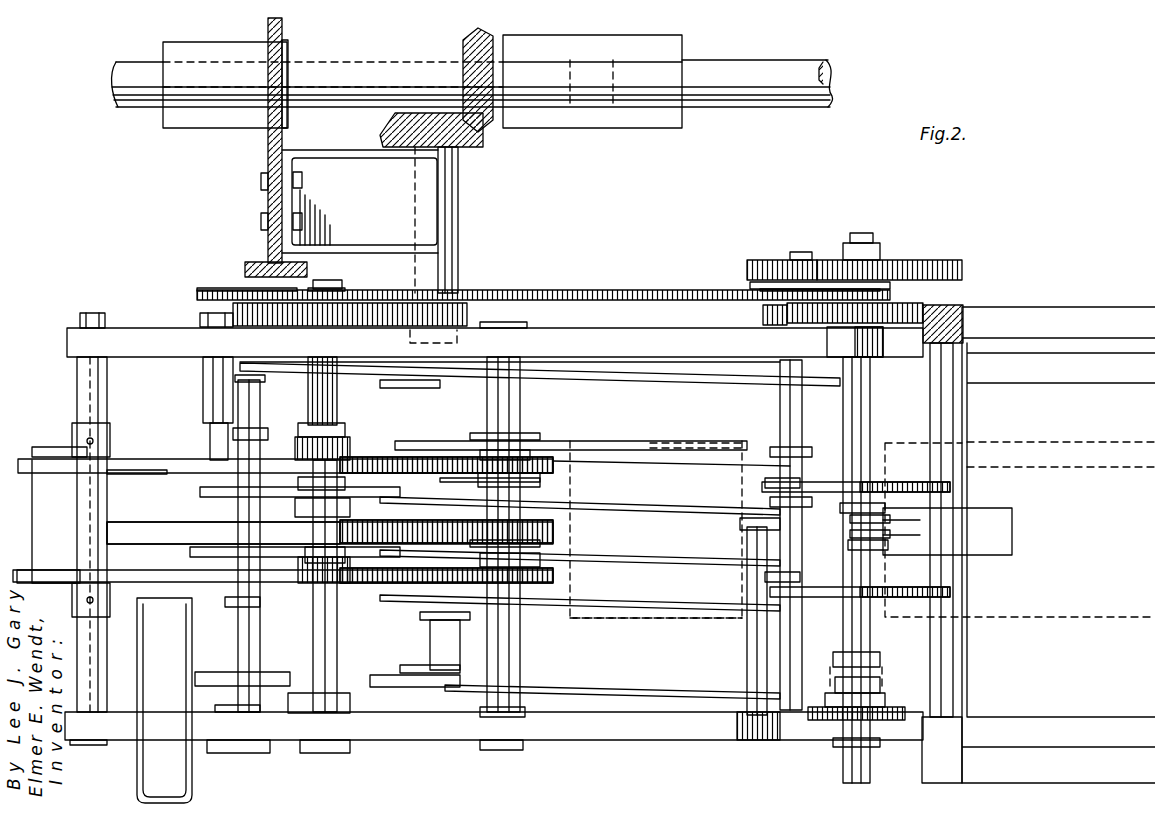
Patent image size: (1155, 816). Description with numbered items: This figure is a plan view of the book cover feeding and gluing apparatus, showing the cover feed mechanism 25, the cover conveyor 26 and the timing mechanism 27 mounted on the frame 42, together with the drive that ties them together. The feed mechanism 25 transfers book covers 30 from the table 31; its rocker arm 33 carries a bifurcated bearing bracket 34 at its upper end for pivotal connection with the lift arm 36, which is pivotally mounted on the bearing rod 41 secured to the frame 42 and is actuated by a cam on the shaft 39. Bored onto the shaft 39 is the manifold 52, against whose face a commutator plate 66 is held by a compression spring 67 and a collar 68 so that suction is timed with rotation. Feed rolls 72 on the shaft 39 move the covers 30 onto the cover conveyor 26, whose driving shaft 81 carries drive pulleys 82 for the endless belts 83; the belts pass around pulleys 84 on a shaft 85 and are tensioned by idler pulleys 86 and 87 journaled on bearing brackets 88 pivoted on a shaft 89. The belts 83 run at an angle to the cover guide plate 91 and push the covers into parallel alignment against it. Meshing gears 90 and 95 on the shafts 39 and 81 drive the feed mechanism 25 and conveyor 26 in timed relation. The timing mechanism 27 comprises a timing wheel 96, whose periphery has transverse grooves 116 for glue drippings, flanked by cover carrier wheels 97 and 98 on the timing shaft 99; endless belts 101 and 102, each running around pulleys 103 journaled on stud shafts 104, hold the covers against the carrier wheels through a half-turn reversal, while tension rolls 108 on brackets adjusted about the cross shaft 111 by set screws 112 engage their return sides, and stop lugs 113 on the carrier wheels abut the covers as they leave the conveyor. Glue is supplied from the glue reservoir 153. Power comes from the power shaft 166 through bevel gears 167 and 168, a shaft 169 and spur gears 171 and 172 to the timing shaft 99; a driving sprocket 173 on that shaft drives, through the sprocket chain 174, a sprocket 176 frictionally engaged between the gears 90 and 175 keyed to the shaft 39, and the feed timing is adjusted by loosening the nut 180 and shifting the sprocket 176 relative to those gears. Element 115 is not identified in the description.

The cover feed mechanism 25 is at (890, 518).
The cover conveyor 26 is at (615, 618).
The timing mechanism 27 is at (545, 533).
The book covers 30 is at (1043, 620).
The table 31 is at (1057, 307).
The rocker arm 33 is at (890, 530).
The bifurcated bearing bracket 34 is at (880, 542).
The lift arm 36 is at (740, 525).
The shaft 39 is at (870, 375).
The bearing rod 41 is at (747, 663).
The frame 42 is at (633, 730).
The manifold 52 is at (893, 706).
The commutator plate 66 is at (883, 690).
The compression spring 67 is at (880, 670).
The collar 68 is at (875, 654).
The feed rolls 72 is at (913, 478).
The driving shaft 81 is at (780, 415).
The drive pulleys 82 is at (748, 490).
The endless belts 83 is at (658, 466).
The pulleys 84 is at (276, 441).
The shaft 85 is at (238, 638).
The idler pulley 86 is at (364, 675).
The idler pulley 87 is at (543, 685).
The bearing brackets 88 is at (398, 438).
The shaft 89 is at (428, 640).
The gear 90 is at (940, 260).
The cover guide plate 91 is at (608, 425).
The gear 95 is at (747, 262).
The timing wheel 96 is at (140, 524).
The cover carrier wheel 97 is at (553, 578).
The cover carrier wheel 98 is at (530, 470).
The timing shaft 99 is at (337, 396).
The endless belt 101 is at (150, 584).
The endless belt 102 is at (143, 456).
The pulleys 103 is at (197, 448).
The stud shafts 104 is at (215, 385).
The tension rolls 108 is at (57, 563).
The cross shaft 111 is at (77, 384).
The set screws 112 is at (78, 440).
The stop lugs 113 is at (525, 481).
The plate 115 is at (137, 472).
The transverse grooves 116 is at (268, 532).
The glue reservoir 153 is at (175, 773).
The power shaft 166 is at (797, 62).
The bevel gear 167 is at (463, 46).
The bevel gear 168 is at (380, 126).
The shaft 169 is at (458, 199).
The spur gear 171 is at (467, 312).
The spur gear 172 is at (378, 283).
The driving sprocket 173 is at (197, 294).
The sprocket chain 174 is at (615, 279).
The gear 175 is at (912, 323).
The sprocket 176 is at (890, 293).
The nut 180 is at (862, 243).